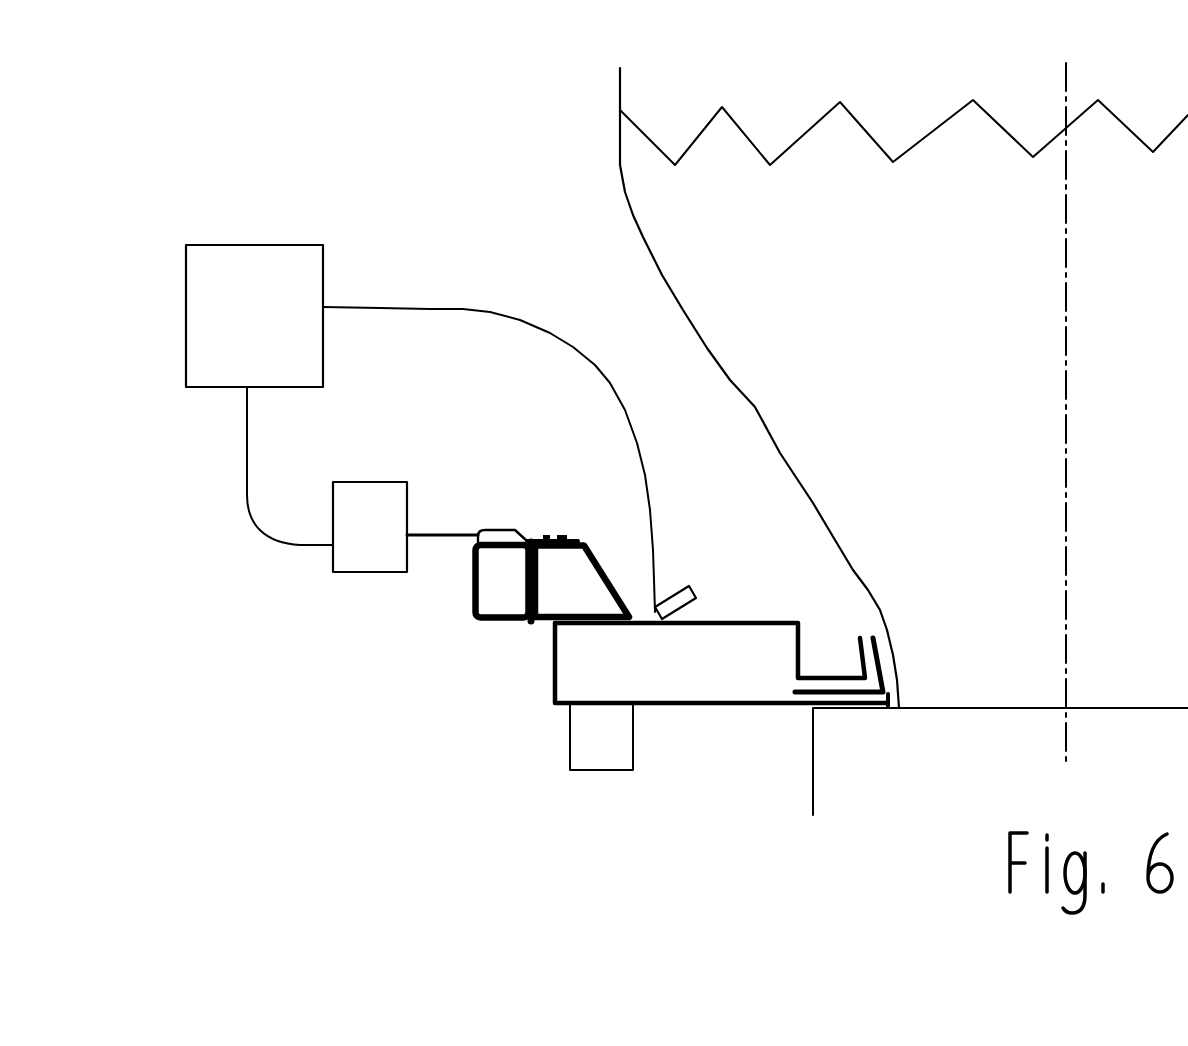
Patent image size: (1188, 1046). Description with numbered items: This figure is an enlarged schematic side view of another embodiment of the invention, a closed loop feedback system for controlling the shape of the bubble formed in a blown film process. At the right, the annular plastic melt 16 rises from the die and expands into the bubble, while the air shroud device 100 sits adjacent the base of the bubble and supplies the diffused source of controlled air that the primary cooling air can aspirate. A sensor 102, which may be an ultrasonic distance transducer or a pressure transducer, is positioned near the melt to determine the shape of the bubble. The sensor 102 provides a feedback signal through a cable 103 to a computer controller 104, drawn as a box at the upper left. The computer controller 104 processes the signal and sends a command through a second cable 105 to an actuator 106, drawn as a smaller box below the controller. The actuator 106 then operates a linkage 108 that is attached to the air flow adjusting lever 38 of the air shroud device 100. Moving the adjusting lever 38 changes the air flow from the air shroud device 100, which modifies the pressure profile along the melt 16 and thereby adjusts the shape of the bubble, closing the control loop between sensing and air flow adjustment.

The annular plastic melt 16 is at (770, 396).
The adjusting lever 38 is at (500, 533).
The air shroud device 100 is at (506, 602).
The sensor 102 is at (675, 593).
The cable 103 is at (467, 310).
The computer controller 104 is at (264, 254).
The cable 105 is at (247, 505).
The actuator 106 is at (363, 553).
The linkage 108 is at (445, 537).